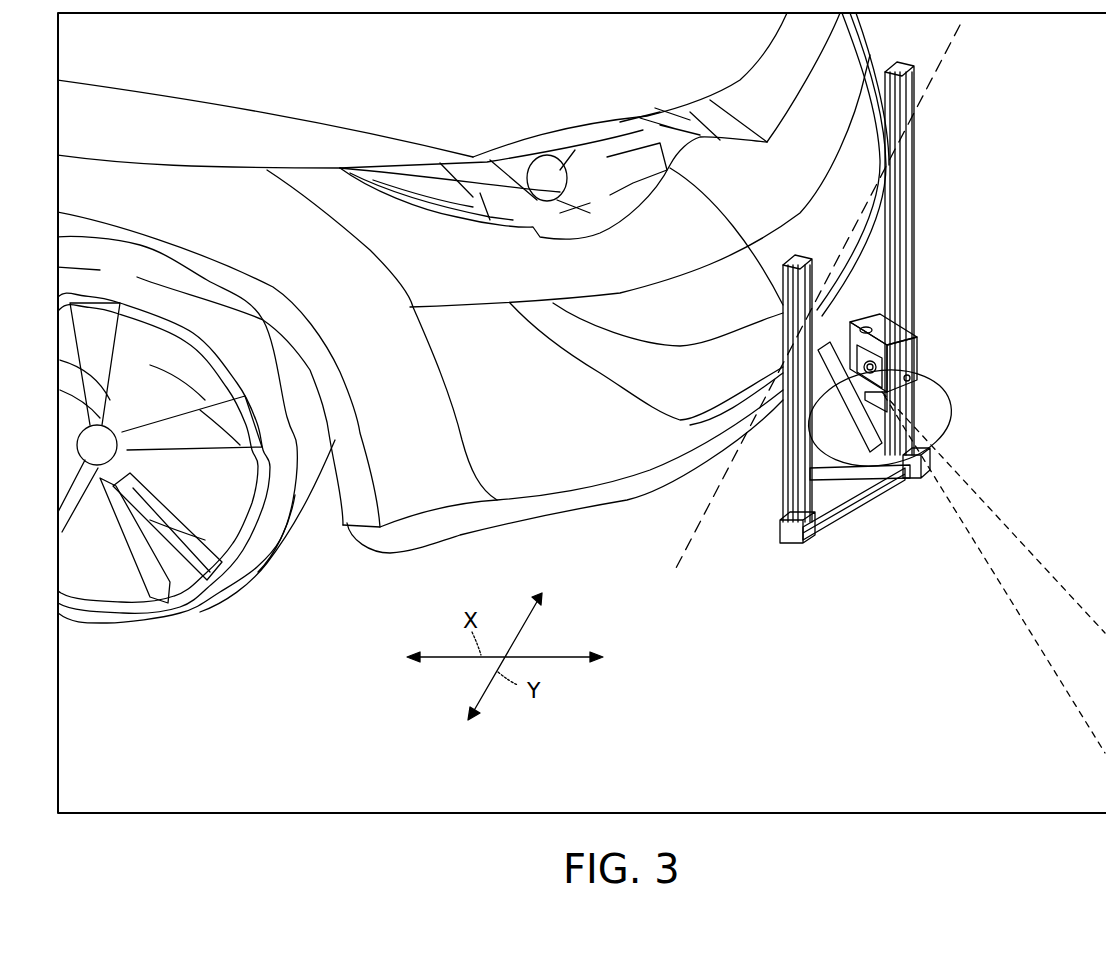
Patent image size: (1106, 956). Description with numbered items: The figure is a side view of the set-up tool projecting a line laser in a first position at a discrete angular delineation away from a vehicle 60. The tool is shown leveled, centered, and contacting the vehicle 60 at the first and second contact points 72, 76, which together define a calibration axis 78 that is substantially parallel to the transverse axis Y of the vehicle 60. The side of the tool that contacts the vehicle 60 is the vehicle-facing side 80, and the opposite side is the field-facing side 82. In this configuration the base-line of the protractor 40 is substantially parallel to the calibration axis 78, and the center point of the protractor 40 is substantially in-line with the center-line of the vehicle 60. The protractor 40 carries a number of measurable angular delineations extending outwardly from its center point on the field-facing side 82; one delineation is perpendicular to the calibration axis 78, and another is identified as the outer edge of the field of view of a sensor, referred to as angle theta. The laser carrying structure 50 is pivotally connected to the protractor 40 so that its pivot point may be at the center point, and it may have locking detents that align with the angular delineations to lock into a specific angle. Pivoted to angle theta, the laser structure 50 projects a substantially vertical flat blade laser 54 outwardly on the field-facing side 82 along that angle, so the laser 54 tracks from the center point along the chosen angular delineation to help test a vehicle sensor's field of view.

The protractor structure 40 is at (948, 400).
The laser carrying structure 50 is at (893, 353).
The laser 54 is at (1047, 587).
The vehicle 60 is at (444, 318).
The first contact point 72 is at (772, 355).
The second contact point 76 is at (870, 182).
The calibration axis 78 is at (703, 520).
The vehicle-facing side 80 is at (629, 575).
The field-facing side 82 is at (907, 577).